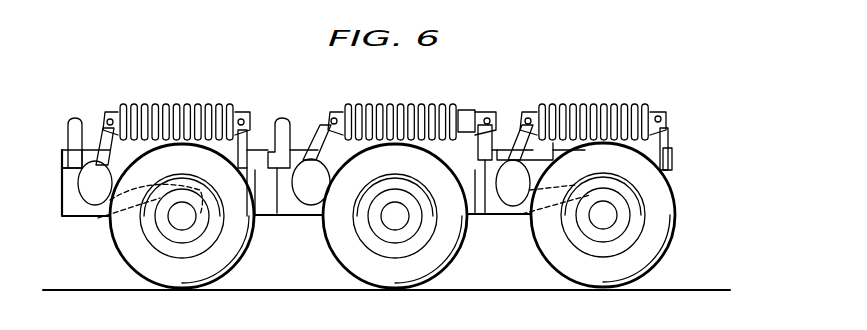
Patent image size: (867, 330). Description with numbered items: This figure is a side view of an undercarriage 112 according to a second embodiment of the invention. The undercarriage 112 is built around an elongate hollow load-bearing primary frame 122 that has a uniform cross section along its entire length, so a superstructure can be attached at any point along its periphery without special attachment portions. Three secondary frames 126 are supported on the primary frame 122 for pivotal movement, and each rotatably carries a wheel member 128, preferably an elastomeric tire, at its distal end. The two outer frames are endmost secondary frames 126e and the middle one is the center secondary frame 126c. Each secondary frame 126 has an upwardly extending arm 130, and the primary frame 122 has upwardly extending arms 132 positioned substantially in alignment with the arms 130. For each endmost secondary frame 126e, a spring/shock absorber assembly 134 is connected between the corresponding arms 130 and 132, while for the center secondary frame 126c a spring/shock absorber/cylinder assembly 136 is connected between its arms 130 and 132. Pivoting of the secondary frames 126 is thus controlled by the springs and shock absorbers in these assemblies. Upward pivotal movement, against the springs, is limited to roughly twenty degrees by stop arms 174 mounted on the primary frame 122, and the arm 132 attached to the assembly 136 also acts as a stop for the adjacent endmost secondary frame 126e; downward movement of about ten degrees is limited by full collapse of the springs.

The undercarriage 112 is at (143, 60).
The primary frame 122 is at (63, 192).
The secondary frame 126 is at (93, 226).
The center secondary frame 126c is at (318, 215).
The endmost secondary frame 126e is at (97, 215).
The wheel member 128 is at (129, 268).
The arm 130 is at (101, 128).
The arm 132 is at (248, 130).
The spring/shock absorber assembly 134 is at (173, 104).
The spring/shock absorber/cylinder assembly 136 is at (393, 102).
The stop arm 174 is at (70, 116).